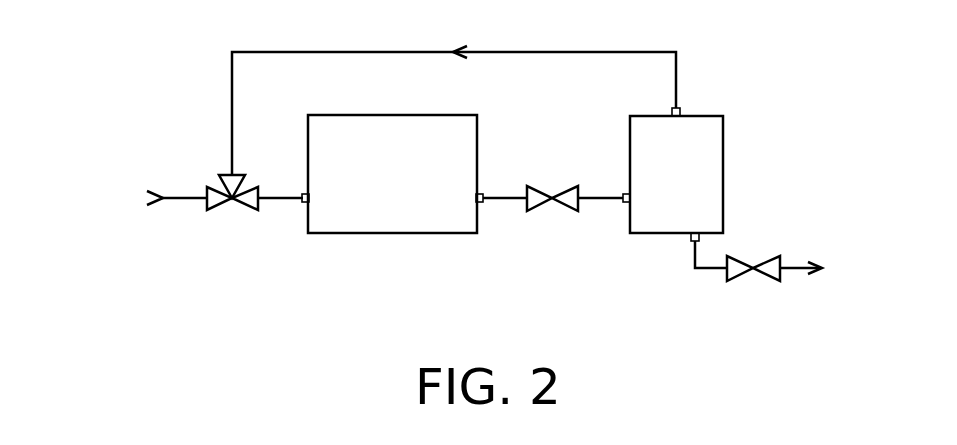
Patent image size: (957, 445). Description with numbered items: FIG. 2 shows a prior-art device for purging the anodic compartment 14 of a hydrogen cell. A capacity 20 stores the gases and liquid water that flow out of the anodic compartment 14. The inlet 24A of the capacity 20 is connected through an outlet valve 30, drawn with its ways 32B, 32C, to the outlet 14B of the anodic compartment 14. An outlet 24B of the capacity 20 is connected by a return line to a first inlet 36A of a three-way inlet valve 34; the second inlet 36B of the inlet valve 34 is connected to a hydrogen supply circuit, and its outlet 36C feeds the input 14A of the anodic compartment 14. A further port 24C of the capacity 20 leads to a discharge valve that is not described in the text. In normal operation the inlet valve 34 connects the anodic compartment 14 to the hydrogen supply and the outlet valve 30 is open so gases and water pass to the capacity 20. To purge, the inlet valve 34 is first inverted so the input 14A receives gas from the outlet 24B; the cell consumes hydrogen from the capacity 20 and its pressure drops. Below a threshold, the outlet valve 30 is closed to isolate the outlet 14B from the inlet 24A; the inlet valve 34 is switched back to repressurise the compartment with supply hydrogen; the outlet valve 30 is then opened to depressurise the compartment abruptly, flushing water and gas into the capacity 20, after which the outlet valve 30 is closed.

The anodic compartment 14 is at (402, 197).
The input of the anodic compartment 14A is at (304, 193).
The outlet of the anodic compartment 14B is at (485, 193).
The capacity 20 is at (691, 193).
The inlet of the capacity 24A is at (624, 192).
The outlet of the capacity 24B is at (682, 110).
The tank drain port 24C is at (692, 242).
The outlet valve 30 is at (555, 188).
The way of the outlet valve 32B is at (536, 210).
The valve outlet port 32C is at (567, 210).
The three-way inlet valve 34 is at (216, 194).
The first inlet of the inlet valve 36A is at (233, 183).
The second inlet of the inlet valve 36B is at (225, 212).
The outlet of the inlet valve 36C is at (246, 212).